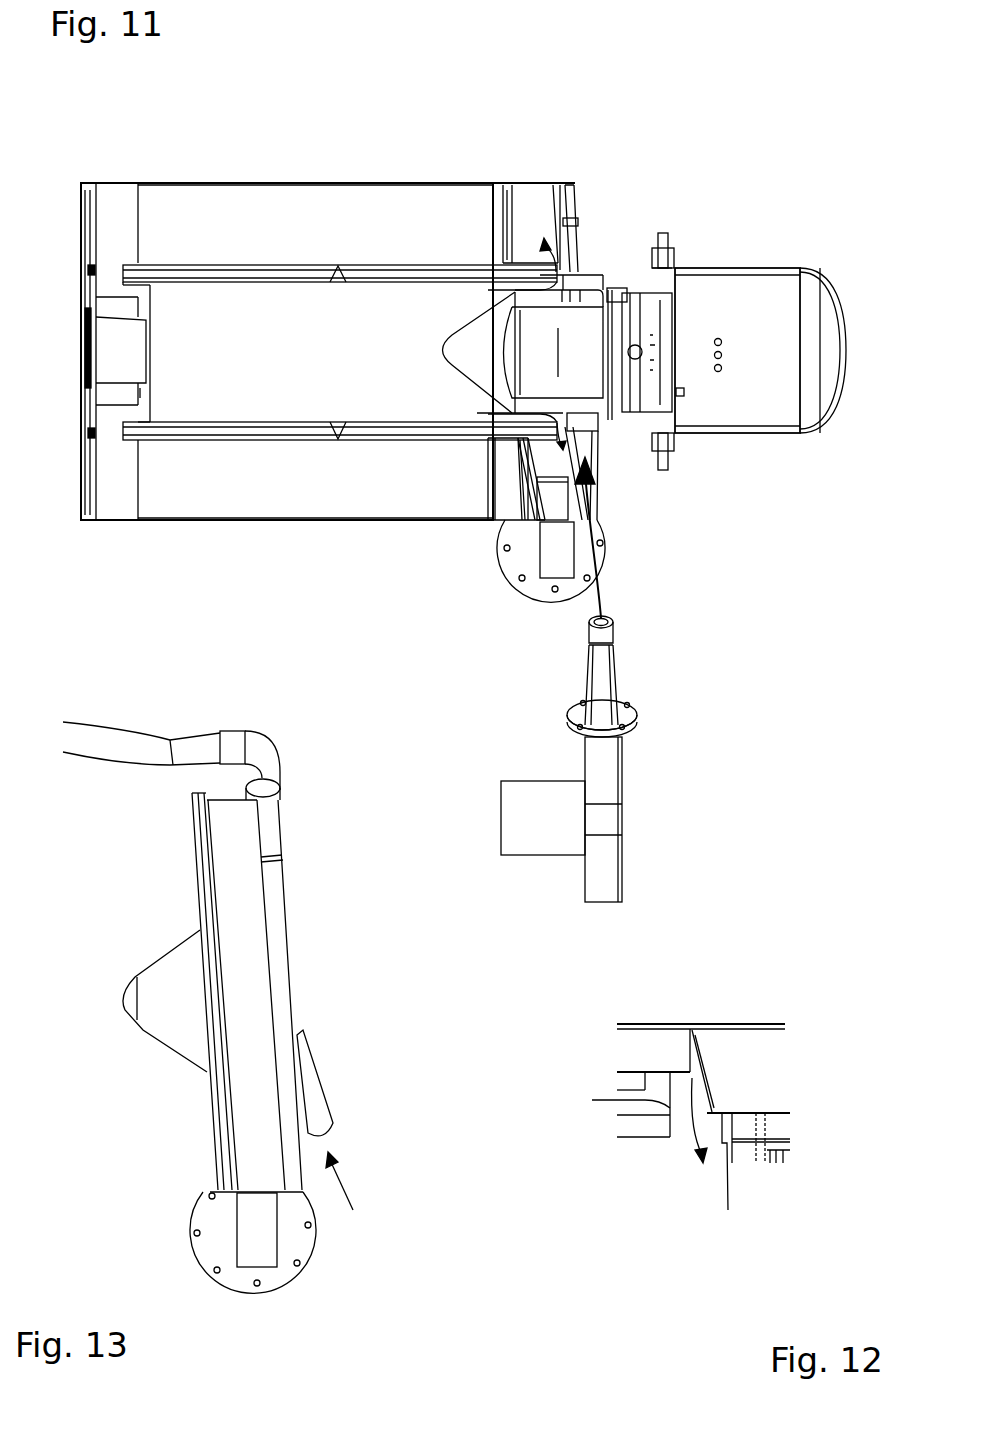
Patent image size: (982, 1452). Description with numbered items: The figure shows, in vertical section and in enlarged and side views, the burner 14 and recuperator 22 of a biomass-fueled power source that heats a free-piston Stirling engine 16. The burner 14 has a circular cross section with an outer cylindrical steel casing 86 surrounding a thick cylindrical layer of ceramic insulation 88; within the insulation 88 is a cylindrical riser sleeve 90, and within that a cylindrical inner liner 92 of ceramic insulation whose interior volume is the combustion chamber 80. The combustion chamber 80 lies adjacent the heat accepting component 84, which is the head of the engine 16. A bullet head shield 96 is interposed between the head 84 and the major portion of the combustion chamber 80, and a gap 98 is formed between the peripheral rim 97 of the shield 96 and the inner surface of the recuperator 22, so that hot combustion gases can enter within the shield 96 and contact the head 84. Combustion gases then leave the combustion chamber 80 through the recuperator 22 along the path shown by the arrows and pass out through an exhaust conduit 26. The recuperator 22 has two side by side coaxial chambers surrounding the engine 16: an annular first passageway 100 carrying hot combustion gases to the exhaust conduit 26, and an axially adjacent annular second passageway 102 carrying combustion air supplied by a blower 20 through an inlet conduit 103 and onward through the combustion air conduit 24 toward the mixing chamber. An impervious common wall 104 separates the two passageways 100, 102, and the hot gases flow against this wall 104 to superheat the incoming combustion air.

In FIG. 11, the burner 14 is at (300, 182).
In FIG. 11, the free-piston Stirling engine 16 is at (660, 218).
In FIG. 11, the blower 20 is at (605, 844).
In FIG. 11, the recuperator 22 is at (565, 185).
In FIG. 13, the recuperator 22 is at (310, 820).
In FIG. 12, the recuperator 22 is at (728, 1180).
In FIG. 13, the combustion air conduit 24 is at (128, 745).
In FIG. 11, the exhaust conduit 26 is at (560, 548).
In FIG. 13, the exhaust conduit 26 is at (255, 1233).
In FIG. 11, the combustion chamber 80 is at (373, 330).
In FIG. 11, the heat accepting component 84 is at (542, 383).
In FIG. 12, the heat accepting component 84 is at (697, 1024).
In FIG. 11, the outer cylindrical steel casing 86 is at (182, 182).
In FIG. 11, the ceramic insulation 88 is at (260, 222).
In FIG. 11, the cylindrical riser sleeve 90 is at (383, 267).
In FIG. 12, the cylindrical riser sleeve 90 is at (623, 1127).
In FIG. 11, the inner liner 92 is at (360, 422).
In FIG. 12, the inner liner 92 is at (618, 1102).
In FIG. 11, the bullet head shield 96 is at (470, 367).
In FIG. 13, the bullet head shield 96 is at (168, 1003).
In FIG. 12, the bullet head shield 96 is at (632, 1067).
In FIG. 12, the peripheral rim 97 is at (690, 1080).
In FIG. 11, the gap 98 is at (557, 425).
In FIG. 12, the gap 98 is at (697, 1075).
In FIG. 11, the first passageway 100 is at (537, 200).
In FIG. 13, the first passageway 100 is at (228, 857).
In FIG. 11, the second passageway 102 is at (583, 448).
In FIG. 13, the second passageway 102 is at (285, 970).
In FIG. 13, the inlet conduit 103 is at (313, 1100).
In FIG. 11, the impervious common wall 104 is at (578, 256).